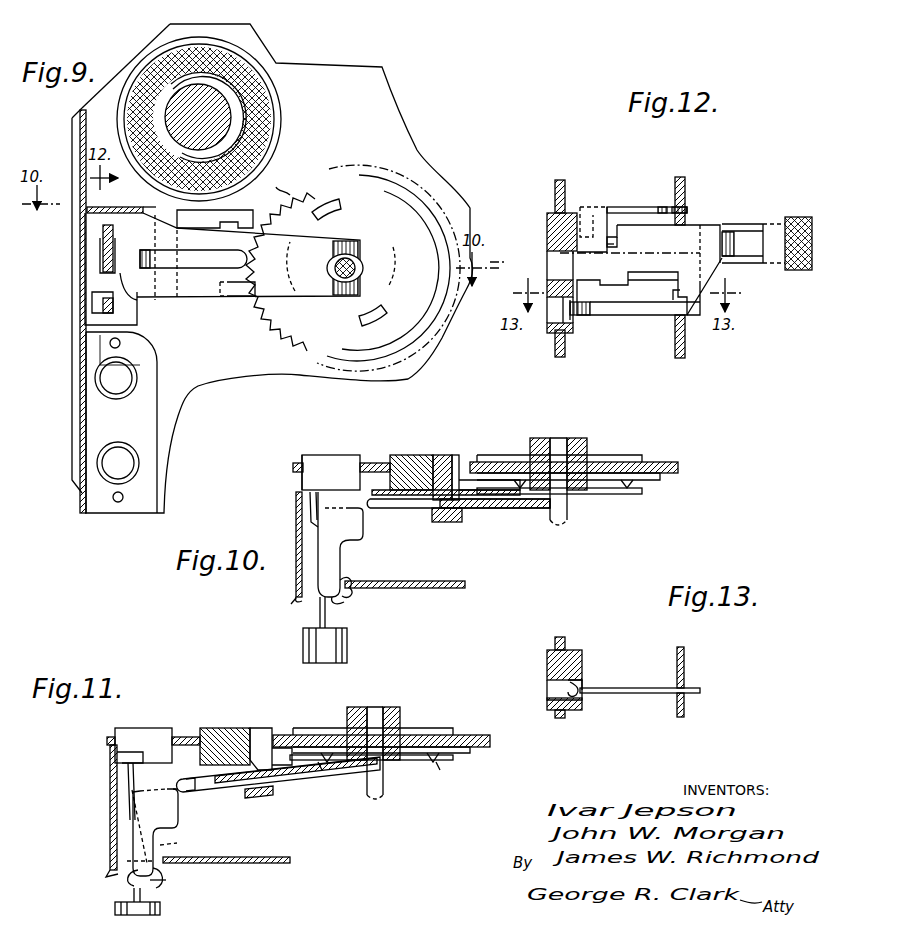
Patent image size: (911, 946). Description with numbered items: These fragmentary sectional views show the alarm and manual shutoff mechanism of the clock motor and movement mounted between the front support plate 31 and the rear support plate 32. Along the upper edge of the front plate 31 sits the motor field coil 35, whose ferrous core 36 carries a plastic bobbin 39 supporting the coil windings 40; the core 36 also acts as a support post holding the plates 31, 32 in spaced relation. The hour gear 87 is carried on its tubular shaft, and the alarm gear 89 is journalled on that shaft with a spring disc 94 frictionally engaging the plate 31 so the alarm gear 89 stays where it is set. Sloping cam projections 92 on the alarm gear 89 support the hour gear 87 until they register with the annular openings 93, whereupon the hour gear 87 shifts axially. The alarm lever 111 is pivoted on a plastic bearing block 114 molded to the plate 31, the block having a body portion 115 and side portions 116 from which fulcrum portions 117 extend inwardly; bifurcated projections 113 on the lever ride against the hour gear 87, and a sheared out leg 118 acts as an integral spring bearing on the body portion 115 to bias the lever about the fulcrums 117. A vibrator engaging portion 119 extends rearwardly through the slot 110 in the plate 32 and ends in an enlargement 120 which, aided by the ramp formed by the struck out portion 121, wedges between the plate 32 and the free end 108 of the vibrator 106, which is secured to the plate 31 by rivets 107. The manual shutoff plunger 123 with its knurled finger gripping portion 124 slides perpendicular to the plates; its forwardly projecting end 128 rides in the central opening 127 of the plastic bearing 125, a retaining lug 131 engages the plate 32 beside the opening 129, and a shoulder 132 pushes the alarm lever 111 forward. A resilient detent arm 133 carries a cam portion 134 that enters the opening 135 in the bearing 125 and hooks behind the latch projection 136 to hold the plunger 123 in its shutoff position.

In FIG. 12, the front support plate 31 is at (558, 338).
In FIG. 10, the front support plate 31 is at (665, 462).
In FIG. 11, the front support plate 31 is at (478, 735).
In FIG. 13, the front support plate 31 is at (560, 638).
In FIG. 12, the rear support plate 32 is at (685, 337).
In FIG. 10, the rear support plate 32 is at (434, 590).
In FIG. 11, the rear support plate 32 is at (250, 865).
In FIG. 13, the rear support plate 32 is at (685, 660).
In FIG. 9, the motor field coil 35 is at (252, 52).
In FIG. 9, the ferrous core 36 is at (233, 106).
In FIG. 9, the plastic bobbin 39 is at (208, 107).
In FIG. 9, the coil windings 40 is at (258, 118).
In FIG. 9, the hour gear 87 is at (312, 172).
In FIG. 10, the hour gear 87 is at (606, 496).
In FIG. 11, the hour gear 87 is at (398, 762).
In FIG. 9, the alarm gear 89 is at (280, 193).
In FIG. 10, the alarm gear 89 is at (652, 473).
In FIG. 11, the alarm gear 89 is at (470, 748).
In FIG. 9, the cam projections 92 is at (440, 212).
In FIG. 10, the cam projections 92 is at (518, 490).
In FIG. 11, the cam projections 92 is at (330, 765).
In FIG. 9, the annular openings 93 is at (326, 213).
In FIG. 11, the annular openings 93 is at (320, 772).
In FIG. 10, the spring disc 94 is at (604, 455).
In FIG. 11, the spring disc 94 is at (424, 725).
In FIG. 9, the vibrator 106 is at (80, 404).
In FIG. 10, the vibrator 106 is at (296, 503).
In FIG. 9, the rivets 107 is at (118, 462).
In FIG. 9, the free end 108 is at (78, 236).
In FIG. 10, the free end 108 is at (294, 575).
In FIG. 11, the free end 108 is at (109, 820).
In FIG. 10, the slot 110 is at (352, 582).
In FIG. 11, the slot 110 is at (130, 874).
In FIG. 9, the alarm lever 111 is at (180, 305).
In FIG. 12, the alarm lever 111 is at (612, 204).
In FIG. 10, the alarm lever 111 is at (374, 506).
In FIG. 11, the alarm lever 111 is at (286, 798).
In FIG. 9, the projections 113 is at (347, 258).
In FIG. 10, the bearing block 114 is at (412, 460).
In FIG. 11, the bearing block 114 is at (222, 730).
In FIG. 10, the body portion 115 is at (440, 460).
In FIG. 11, the body portion 115 is at (262, 730).
In FIG. 9, the side portions 116 is at (219, 222).
In FIG. 9, the fulcrum portions 117 is at (228, 244).
In FIG. 10, the fulcrum portions 117 is at (448, 524).
In FIG. 11, the fulcrum portions 117 is at (262, 799).
In FIG. 10, the sheared out leg 118 is at (456, 450).
In FIG. 11, the sheared out leg 118 is at (208, 792).
In FIG. 9, the vibrator engaging portion 119 is at (98, 212).
In FIG. 12, the vibrator engaging portion 119 is at (646, 200).
In FIG. 10, the vibrator engaging portion 119 is at (337, 555).
In FIG. 11, the vibrator engaging portion 119 is at (172, 829).
In FIG. 10, the enlargement 120 is at (342, 600).
In FIG. 11, the enlargement 120 is at (160, 882).
In FIG. 10, the struck out portion 121 is at (294, 598).
In FIG. 11, the struck out portion 121 is at (108, 868).
In FIG. 9, the manual shutoff plunger 123 is at (103, 258).
In FIG. 12, the manual shutoff plunger 123 is at (688, 236).
In FIG. 10, the manual shutoff plunger 123 is at (326, 626).
In FIG. 11, the manual shutoff plunger 123 is at (120, 758).
In FIG. 12, the finger gripping portion 124 is at (773, 258).
In FIG. 10, the finger gripping portion 124 is at (340, 650).
In FIG. 11, the finger gripping portion 124 is at (137, 901).
In FIG. 12, the plastic bearing 125 is at (547, 220).
In FIG. 10, the plastic bearing 125 is at (336, 462).
In FIG. 11, the plastic bearing 125 is at (152, 735).
In FIG. 13, the plastic bearing 125 is at (577, 652).
In FIG. 12, the central opening 127 is at (550, 258).
In FIG. 12, the forwardly projecting end 128 is at (576, 272).
In FIG. 12, the opening 129 is at (672, 302).
In FIG. 9, the retaining lug 131 is at (120, 278).
In FIG. 12, the retaining lug 131 is at (650, 278).
In FIG. 11, the retaining lug 131 is at (177, 845).
In FIG. 12, the shoulder 132 is at (620, 246).
In FIG. 9, the detent arm 133 is at (100, 305).
In FIG. 12, the detent arm 133 is at (598, 308).
In FIG. 10, the detent arm 133 is at (310, 515).
In FIG. 11, the detent arm 133 is at (126, 772).
In FIG. 13, the detent arm 133 is at (634, 695).
In FIG. 13, the cam portion 134 is at (582, 690).
In FIG. 12, the opening 135 is at (556, 310).
In FIG. 13, the opening 135 is at (548, 690).
In FIG. 13, the latch projection 136 is at (580, 680).